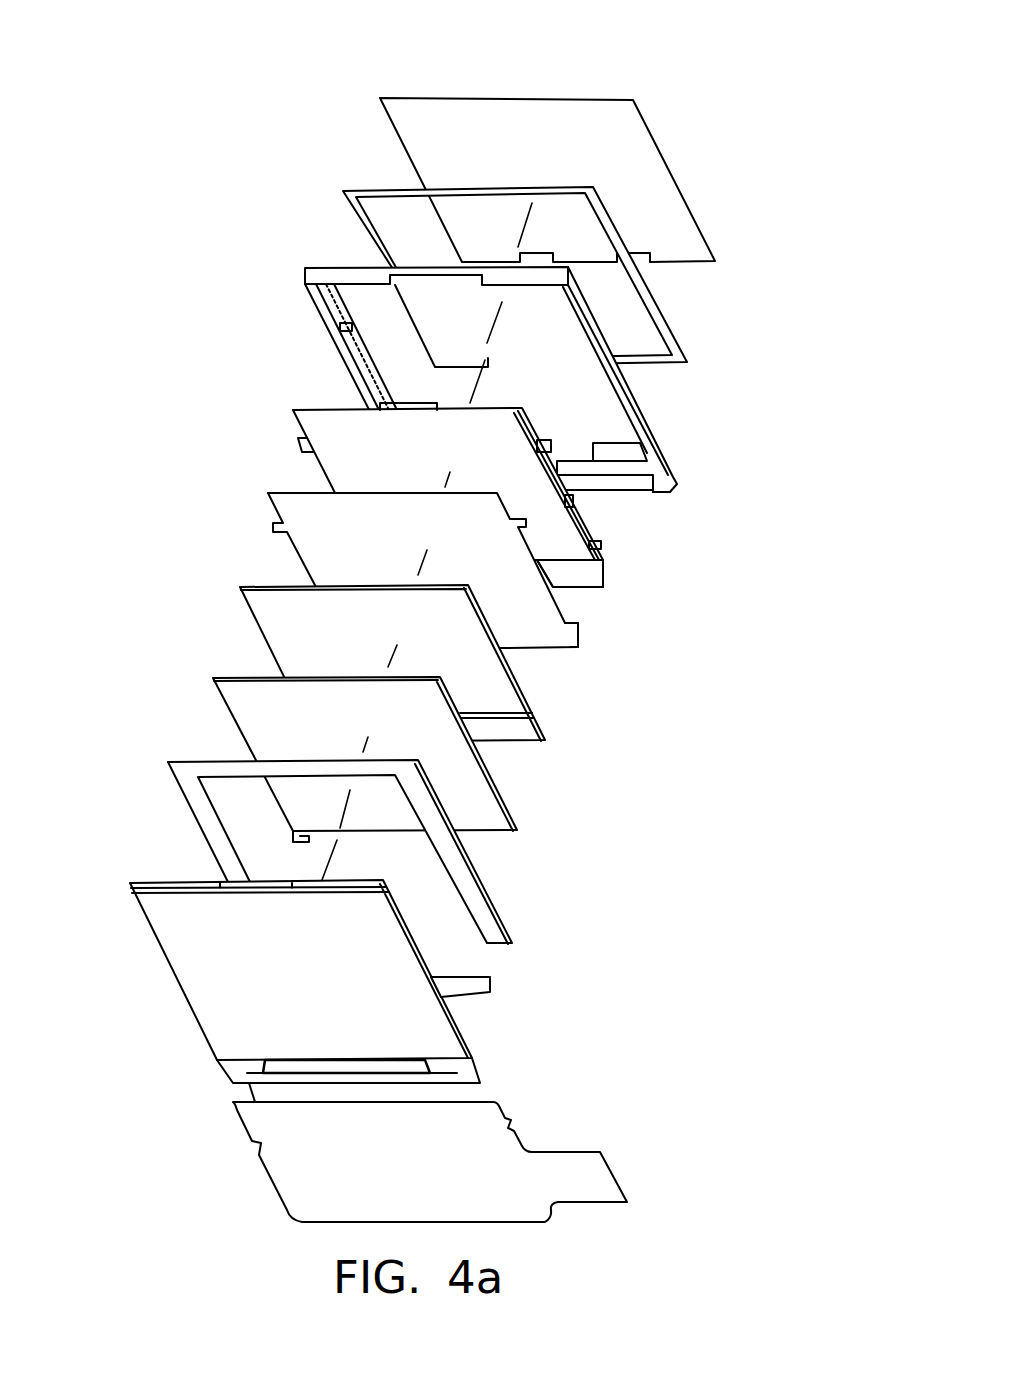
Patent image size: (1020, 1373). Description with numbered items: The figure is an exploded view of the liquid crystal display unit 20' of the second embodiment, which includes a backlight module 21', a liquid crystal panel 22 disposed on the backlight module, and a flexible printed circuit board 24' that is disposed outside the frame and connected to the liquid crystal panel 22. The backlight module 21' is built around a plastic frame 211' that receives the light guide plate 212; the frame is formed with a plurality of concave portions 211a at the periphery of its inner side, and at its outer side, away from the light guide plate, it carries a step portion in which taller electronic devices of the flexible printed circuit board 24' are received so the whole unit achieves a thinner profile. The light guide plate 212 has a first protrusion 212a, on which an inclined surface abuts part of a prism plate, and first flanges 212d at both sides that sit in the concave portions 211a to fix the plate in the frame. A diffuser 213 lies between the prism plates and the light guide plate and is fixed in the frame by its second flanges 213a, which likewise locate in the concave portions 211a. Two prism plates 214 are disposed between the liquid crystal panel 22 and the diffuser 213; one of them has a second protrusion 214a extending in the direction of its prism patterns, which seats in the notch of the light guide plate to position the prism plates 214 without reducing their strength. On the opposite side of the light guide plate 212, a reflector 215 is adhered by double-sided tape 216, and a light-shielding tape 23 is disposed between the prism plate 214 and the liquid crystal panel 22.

The liquid crystal display unit 20' is at (115, 24).
The backlight module 21' is at (167, 389).
The frame 211' is at (436, 379).
The concave portions 211a is at (345, 318).
The light guide plate 212 is at (335, 430).
The first protrusion 212a is at (612, 576).
The first flanges 212d is at (302, 458).
The diffuser 213 is at (322, 545).
The second flanges 213a is at (582, 628).
The prism plates 214 is at (272, 710).
The second protrusion 214a is at (296, 833).
The reflector 215 is at (400, 143).
The double-sided tape 216 is at (350, 214).
The liquid crystal panel 22 is at (200, 983).
The light-shielding tape 23 is at (491, 988).
The flexible printed circuit board 24' is at (401, 1152).